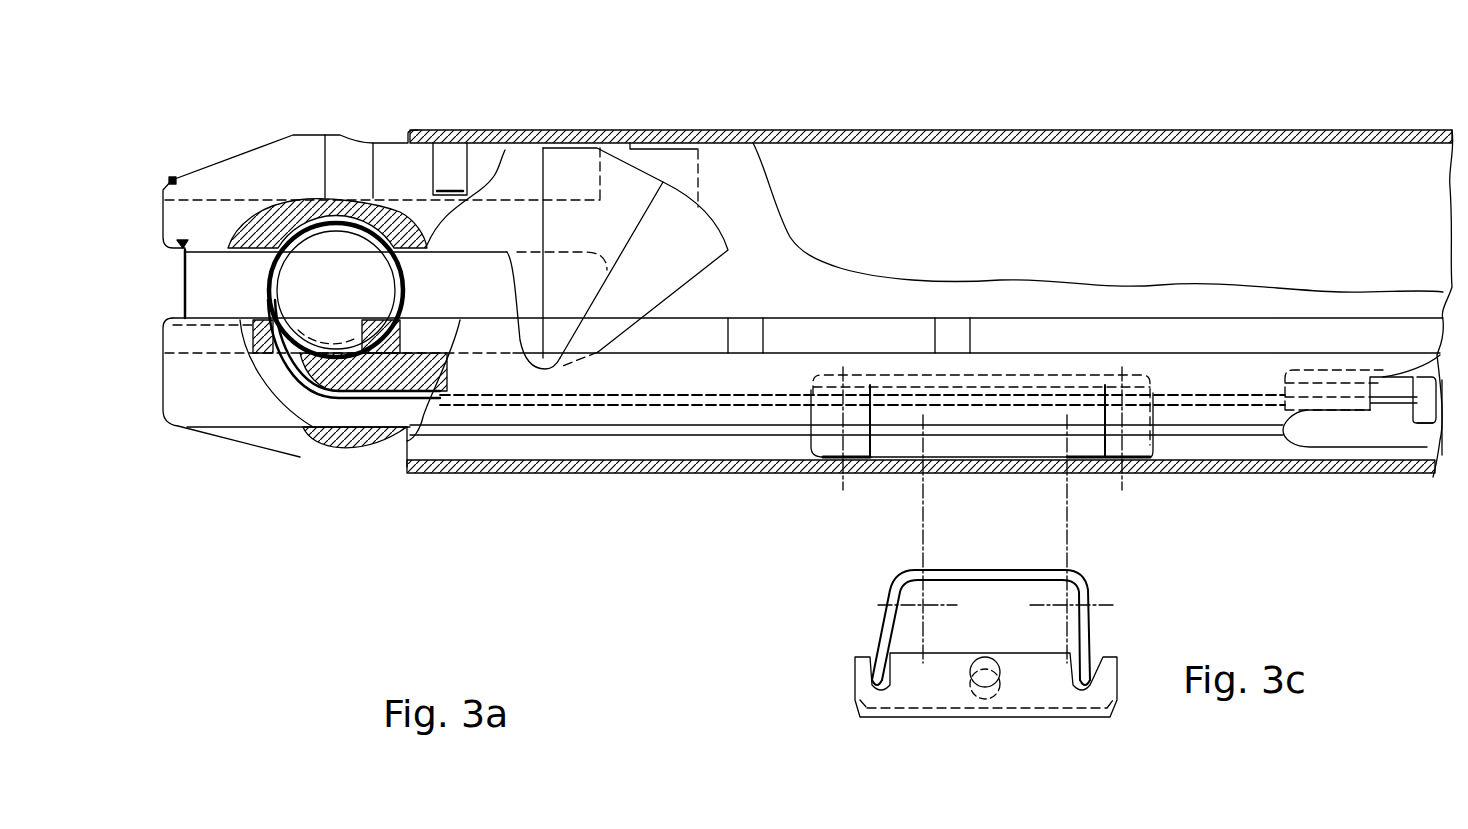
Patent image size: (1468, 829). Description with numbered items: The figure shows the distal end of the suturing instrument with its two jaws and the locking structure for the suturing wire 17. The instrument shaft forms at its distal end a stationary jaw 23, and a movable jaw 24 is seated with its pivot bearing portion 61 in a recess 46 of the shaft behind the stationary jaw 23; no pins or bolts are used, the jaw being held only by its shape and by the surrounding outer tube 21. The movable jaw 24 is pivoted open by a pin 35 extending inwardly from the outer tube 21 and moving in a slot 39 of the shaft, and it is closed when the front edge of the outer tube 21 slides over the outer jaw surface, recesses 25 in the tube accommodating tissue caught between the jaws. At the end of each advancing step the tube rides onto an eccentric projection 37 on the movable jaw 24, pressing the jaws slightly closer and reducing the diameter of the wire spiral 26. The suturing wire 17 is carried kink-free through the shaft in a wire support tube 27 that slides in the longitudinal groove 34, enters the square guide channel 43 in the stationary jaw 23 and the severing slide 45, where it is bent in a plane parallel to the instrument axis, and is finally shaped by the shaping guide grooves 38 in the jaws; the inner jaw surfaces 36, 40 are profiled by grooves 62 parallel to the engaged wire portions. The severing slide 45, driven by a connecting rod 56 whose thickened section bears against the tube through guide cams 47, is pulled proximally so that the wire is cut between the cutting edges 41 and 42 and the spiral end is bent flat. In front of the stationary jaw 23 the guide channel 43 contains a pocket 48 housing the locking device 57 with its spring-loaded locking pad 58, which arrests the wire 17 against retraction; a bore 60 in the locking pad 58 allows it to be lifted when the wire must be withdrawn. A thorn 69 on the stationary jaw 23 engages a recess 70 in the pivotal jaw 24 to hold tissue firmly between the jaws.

In FIG. 3A, the suturing wire 17 is at (1383, 403).
In FIG. 3A, the outer tube 21 is at (653, 135).
In FIG. 3A, the stationary jaw 23 is at (188, 387).
In FIG. 3A, the movable jaw 24 is at (397, 157).
In FIG. 3A, the recess 25 is at (568, 275).
In FIG. 3A, the spiral 26 is at (327, 213).
In FIG. 3A, the wire support tube 27 is at (1432, 410).
In FIG. 3A, the longitudinal groove 34 is at (1347, 417).
In FIG. 3A, the pin 35 is at (447, 150).
In FIG. 3A, the inner jaw surface 36 is at (292, 230).
In FIG. 3A, the projection 37 is at (272, 168).
In FIG. 3A, the shaping guide grooves 38 is at (358, 330).
In FIG. 3A, the slot 39 is at (498, 160).
In FIG. 3A, the inner jaw surface 40 is at (310, 400).
In FIG. 3A, the cutting edge 41 is at (267, 343).
In FIG. 3A, the cutting edge 42 is at (285, 375).
In FIG. 3A, the guide channel 43 is at (302, 360).
In FIG. 3A, the severing slide 45 is at (430, 337).
In FIG. 3A, the recess 46 is at (540, 363).
In FIG. 3A, the guide cams 47 is at (798, 343).
In FIG. 3A, the pocket 48 is at (1010, 443).
In FIG. 3A, the connecting rod 56 is at (1168, 347).
In FIG. 3C, the locking device 57 is at (980, 577).
In FIG. 3C, the locking pad 58 is at (955, 697).
In FIG. 3C, the bore 60 is at (990, 680).
In FIG. 3A, the pivot bearing portion 61 is at (548, 362).
In FIG. 3A, the grooves 62 is at (172, 180).
In FIG. 3A, the thorn 69 is at (173, 290).
In FIG. 3A, the recess 70 is at (165, 232).